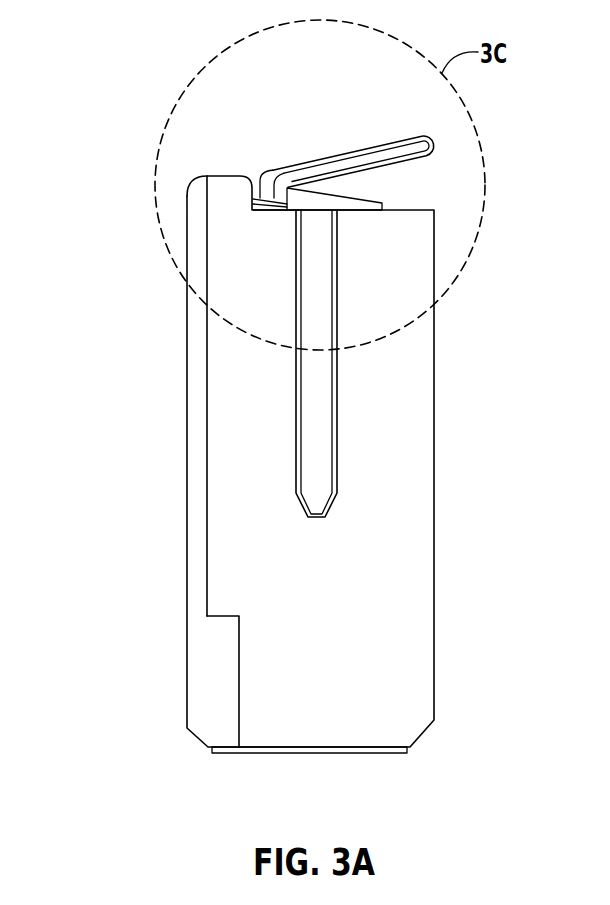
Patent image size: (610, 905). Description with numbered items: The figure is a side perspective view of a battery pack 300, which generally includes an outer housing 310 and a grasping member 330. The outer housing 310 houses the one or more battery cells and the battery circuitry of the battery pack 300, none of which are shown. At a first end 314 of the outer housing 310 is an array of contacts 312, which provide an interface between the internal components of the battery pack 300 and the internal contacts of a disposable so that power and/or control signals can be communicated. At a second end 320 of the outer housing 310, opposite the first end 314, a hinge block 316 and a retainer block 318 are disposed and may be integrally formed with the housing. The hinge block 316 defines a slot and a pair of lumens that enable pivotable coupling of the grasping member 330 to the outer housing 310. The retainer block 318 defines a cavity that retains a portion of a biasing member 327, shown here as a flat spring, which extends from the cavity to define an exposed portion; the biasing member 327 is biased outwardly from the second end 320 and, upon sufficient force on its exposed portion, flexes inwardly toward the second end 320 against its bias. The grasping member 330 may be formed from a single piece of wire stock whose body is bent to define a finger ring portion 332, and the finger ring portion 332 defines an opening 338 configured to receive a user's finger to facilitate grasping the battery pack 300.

The battery pack 300 is at (473, 392).
The outer housing 310 is at (187, 490).
The contacts 312 is at (375, 753).
The first end 314 is at (227, 679).
The hinge block 316 is at (217, 176).
The retainer block 318 is at (322, 212).
The second end 320 is at (226, 258).
The biasing member 327 is at (257, 207).
The grasping member 330 is at (313, 121).
The finger ring portion 332 is at (400, 130).
The opening 338 is at (397, 160).